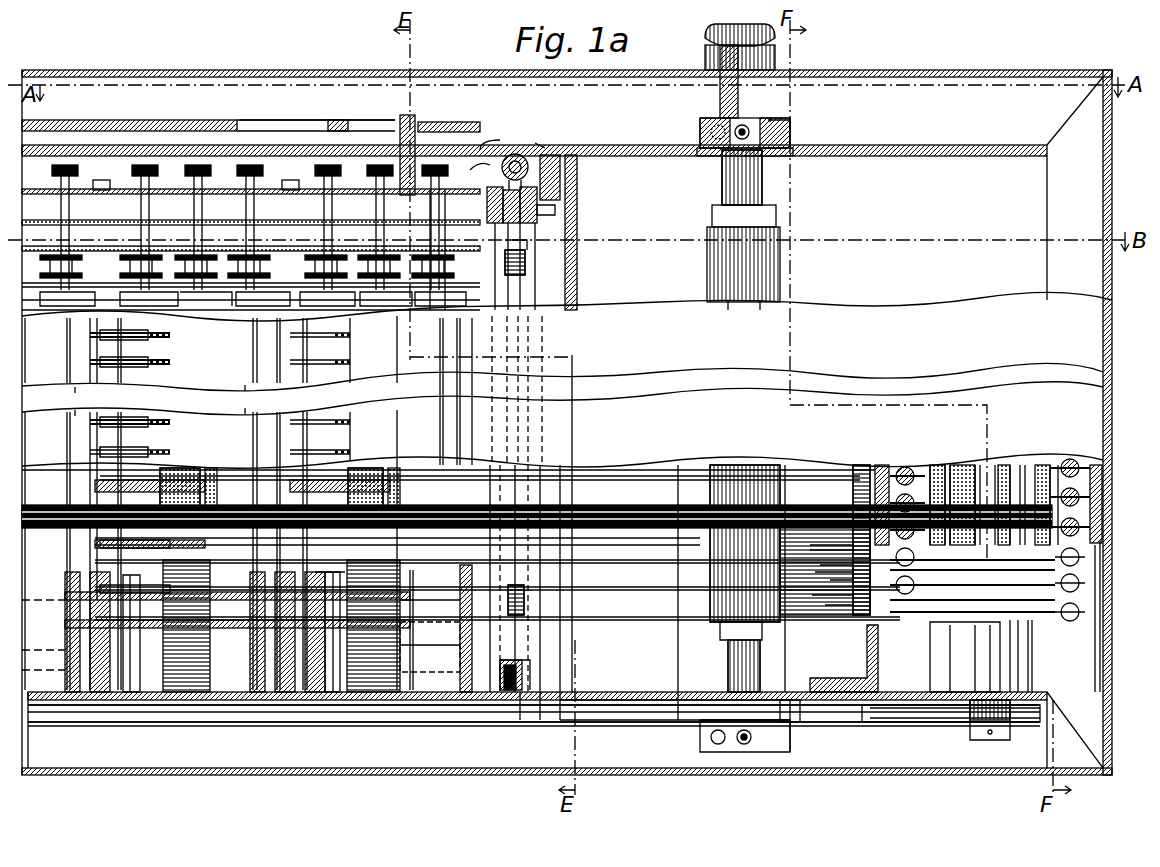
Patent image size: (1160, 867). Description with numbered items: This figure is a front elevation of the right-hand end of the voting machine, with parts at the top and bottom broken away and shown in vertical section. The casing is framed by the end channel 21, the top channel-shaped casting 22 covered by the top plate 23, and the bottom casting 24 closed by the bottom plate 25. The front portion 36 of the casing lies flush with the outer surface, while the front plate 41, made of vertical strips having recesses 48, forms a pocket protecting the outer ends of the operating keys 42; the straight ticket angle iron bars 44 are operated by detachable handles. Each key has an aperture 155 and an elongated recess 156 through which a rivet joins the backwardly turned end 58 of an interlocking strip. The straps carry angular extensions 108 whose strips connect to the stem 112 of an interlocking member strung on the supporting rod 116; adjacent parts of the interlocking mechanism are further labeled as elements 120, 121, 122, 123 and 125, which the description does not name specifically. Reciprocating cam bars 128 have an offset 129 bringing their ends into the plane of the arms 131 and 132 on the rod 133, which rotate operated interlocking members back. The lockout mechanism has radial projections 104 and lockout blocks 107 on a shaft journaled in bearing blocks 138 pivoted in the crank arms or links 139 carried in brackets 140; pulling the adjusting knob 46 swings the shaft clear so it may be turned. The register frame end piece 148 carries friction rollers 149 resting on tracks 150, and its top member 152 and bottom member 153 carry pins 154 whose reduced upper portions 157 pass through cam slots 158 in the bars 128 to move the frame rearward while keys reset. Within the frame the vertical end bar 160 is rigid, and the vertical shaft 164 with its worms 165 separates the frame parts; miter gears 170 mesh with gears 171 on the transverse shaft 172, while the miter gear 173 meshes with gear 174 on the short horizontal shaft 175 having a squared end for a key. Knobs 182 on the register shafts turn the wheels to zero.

The channel 21 is at (1104, 664).
The channel-shaped casting 22 is at (860, 140).
The top plate 23 is at (826, 70).
The channel-shaped casting 24 is at (690, 712).
The bottom plate 25 is at (960, 768).
The front portion of casing 36 is at (855, 383).
The front plate 41 is at (372, 438).
The operating keys 42 is at (100, 360).
The straight ticket angle iron bars 44 is at (258, 385).
The adjusting knob 46 is at (706, 40).
The recesses 48 is at (130, 422).
The backwardly turned end 58 is at (135, 566).
The radial projections 104 is at (782, 630).
The lockout blocks 107 is at (735, 628).
The angular extensions 108 is at (853, 484).
The stem 112 is at (975, 610).
The supporting rod 116 is at (980, 465).
The mesh column 120 is at (1058, 465).
The angle bracket 121 is at (863, 658).
The upper bolt 122 is at (1080, 555).
The bolts 123 is at (1082, 612).
The hatched bolt 125 is at (1070, 460).
The cam bars 128 is at (243, 725).
The offset 129 is at (625, 712).
The arm 131 is at (872, 712).
The arm 132 is at (855, 718).
The rod 133 is at (1033, 648).
The bearing blocks 138 is at (780, 780).
The crank arms or links 139 is at (705, 775).
The brackets 140 is at (780, 133).
The end piece 148 is at (528, 280).
The friction rollers 149 is at (556, 210).
The tracks 150 is at (522, 678).
The top member 152 is at (455, 185).
The bottom member 153 is at (462, 700).
The pins 154 is at (455, 122).
The aperture 155 is at (460, 236).
The elongated recess 156 is at (430, 636).
The reduced upper portions 157 is at (408, 115).
The cam slots 158 is at (370, 120).
The vertical end bar 160 is at (500, 300).
The vertical shaft 164 is at (522, 300).
The worms 165 is at (526, 602).
The miter gears 170 is at (540, 700).
The miter gears 171 is at (510, 695).
The transverse shaft 172 is at (333, 700).
The miter gear 173 is at (545, 182).
The miter gear 174 is at (545, 158).
The short horizontal shaft 175 is at (530, 150).
The knobs 182 is at (318, 165).